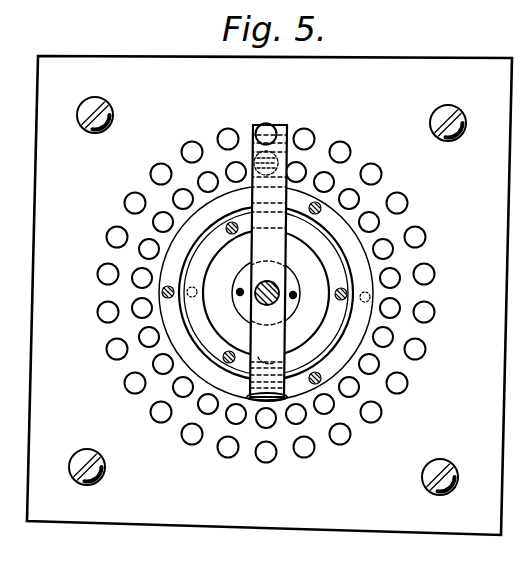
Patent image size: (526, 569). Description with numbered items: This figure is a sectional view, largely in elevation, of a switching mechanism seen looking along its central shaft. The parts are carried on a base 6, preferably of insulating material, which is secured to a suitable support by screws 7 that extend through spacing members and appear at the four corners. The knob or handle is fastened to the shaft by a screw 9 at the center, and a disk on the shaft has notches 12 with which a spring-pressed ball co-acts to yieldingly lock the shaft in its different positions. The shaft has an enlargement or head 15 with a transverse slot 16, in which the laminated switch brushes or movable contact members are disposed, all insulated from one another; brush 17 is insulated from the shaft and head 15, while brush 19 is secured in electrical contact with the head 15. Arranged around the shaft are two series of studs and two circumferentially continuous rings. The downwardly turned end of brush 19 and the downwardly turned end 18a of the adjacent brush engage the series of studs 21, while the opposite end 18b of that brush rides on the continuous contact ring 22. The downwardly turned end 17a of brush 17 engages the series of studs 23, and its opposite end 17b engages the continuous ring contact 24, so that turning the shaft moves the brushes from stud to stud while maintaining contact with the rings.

The base 6 is at (490, 447).
The screws 7 is at (108, 106).
The screw 9 is at (276, 286).
The notches 12 is at (253, 196).
The head 15 is at (294, 301).
The transverse slot 16 is at (243, 298).
The switch brush 17 is at (284, 345).
The downwardly turned end of brush 17a is at (256, 128).
The opposite end of brush 17b is at (297, 397).
The downwardly turned end of brush 18a is at (253, 150).
The opposite end of brush 18b is at (258, 357).
The switch brush 19 is at (288, 162).
The series of studs 21 is at (160, 208).
The contact ring 22 is at (342, 270).
The series of studs 23 is at (160, 162).
The ring contact 24 is at (322, 210).